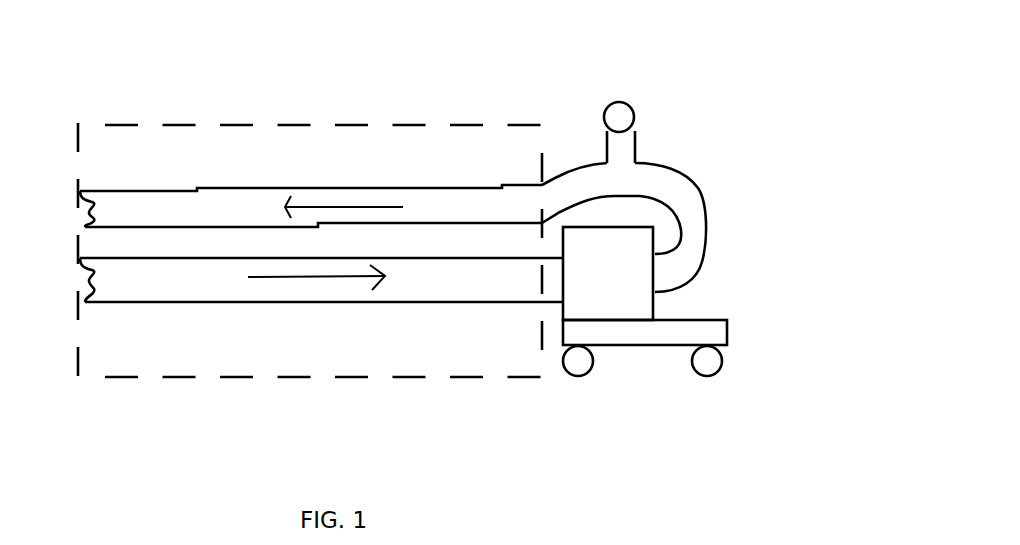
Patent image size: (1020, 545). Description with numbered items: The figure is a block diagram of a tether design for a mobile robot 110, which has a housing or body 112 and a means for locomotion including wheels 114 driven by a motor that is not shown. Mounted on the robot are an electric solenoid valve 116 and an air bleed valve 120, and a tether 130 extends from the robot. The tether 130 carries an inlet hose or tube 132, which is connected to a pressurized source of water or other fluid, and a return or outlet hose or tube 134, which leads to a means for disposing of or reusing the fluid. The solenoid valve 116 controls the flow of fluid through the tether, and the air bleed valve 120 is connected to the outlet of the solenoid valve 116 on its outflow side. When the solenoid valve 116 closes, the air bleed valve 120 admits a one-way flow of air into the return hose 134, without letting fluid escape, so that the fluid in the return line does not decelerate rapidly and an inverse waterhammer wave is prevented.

The mobile robot 110 is at (635, 349).
The housing or body 112 is at (707, 332).
The wheels 114 is at (580, 362).
The electric solenoid valve 116 is at (625, 300).
The air bleed valve 120 is at (618, 120).
The tether 130 is at (135, 162).
The inlet hose or tube 132 is at (240, 293).
The return or outlet hose or tube 134 is at (223, 203).